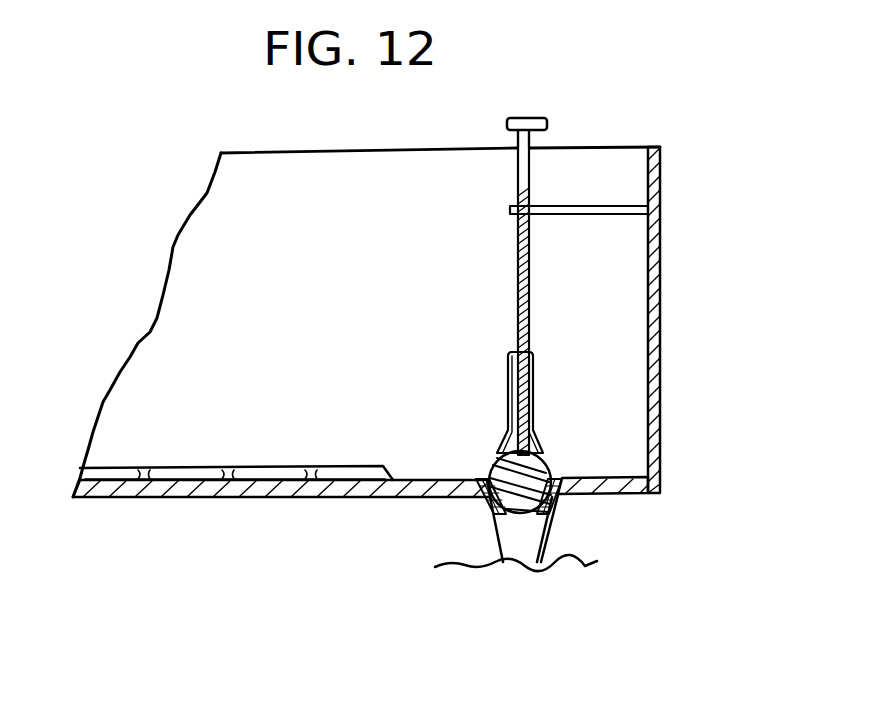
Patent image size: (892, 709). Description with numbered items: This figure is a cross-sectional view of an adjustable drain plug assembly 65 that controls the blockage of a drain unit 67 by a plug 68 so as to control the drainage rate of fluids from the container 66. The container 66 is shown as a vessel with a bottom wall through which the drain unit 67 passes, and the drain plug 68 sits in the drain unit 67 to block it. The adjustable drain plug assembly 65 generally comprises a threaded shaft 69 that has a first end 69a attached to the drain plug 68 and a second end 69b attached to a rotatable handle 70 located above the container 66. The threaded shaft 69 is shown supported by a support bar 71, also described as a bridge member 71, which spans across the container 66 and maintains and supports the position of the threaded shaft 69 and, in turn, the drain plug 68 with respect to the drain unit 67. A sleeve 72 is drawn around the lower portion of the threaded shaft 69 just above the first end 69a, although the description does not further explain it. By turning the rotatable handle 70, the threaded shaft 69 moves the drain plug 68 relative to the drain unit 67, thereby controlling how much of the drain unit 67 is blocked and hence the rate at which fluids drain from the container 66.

The adjustable drain plug assembly 65 is at (670, 92).
The container 66 is at (388, 148).
The drain unit 67 is at (510, 583).
The drain plug 68 is at (550, 516).
The threaded shaft 69 is at (518, 297).
The first end of threaded shaft 69a is at (531, 447).
The second end of threaded shaft 69b is at (530, 135).
The rotatable handle 70 is at (541, 118).
The support bar 71 is at (613, 218).
The sleeve 72 is at (533, 372).